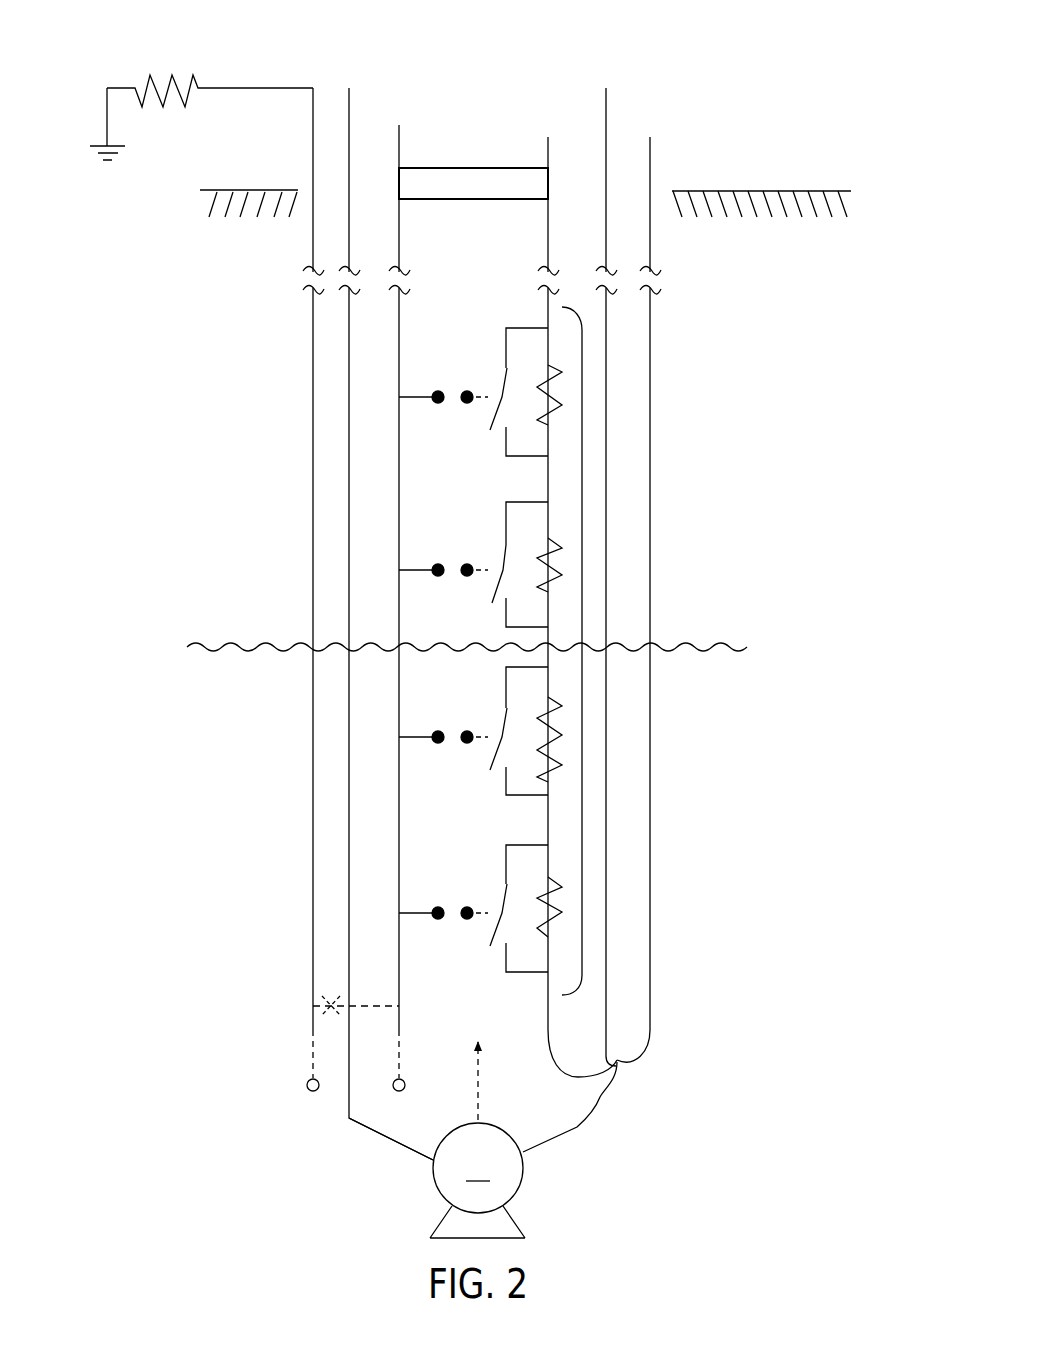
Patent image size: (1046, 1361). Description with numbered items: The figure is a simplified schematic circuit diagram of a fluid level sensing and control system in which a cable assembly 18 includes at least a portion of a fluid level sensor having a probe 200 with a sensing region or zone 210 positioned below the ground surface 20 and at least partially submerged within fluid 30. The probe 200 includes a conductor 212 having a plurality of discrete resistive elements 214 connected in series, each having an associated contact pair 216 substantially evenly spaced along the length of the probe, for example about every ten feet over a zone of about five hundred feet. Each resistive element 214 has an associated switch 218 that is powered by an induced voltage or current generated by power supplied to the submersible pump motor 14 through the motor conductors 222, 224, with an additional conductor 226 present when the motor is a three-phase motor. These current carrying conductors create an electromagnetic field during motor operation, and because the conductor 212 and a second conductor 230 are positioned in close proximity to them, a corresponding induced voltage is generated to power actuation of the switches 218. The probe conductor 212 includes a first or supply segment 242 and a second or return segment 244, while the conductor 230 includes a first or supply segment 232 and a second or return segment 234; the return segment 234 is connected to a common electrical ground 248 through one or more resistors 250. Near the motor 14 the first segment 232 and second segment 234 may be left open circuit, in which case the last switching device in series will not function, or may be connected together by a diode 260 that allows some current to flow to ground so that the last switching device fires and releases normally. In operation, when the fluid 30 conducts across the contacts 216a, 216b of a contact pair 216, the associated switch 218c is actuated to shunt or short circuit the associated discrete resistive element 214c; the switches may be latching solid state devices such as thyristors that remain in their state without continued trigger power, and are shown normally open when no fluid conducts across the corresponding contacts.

The submersible pump motor 14 is at (477, 1180).
The cable assembly 18 is at (268, 430).
The ground surface 20 is at (272, 183).
The fluid 30 is at (680, 637).
The probe 200 is at (690, 143).
The sensing region or zone 210 is at (583, 607).
The conductor 212 is at (543, 236).
The discrete resistive elements 214 is at (560, 385).
The discrete resistive element 214c is at (560, 723).
The contact pair 216 is at (443, 552).
The contact 216a is at (438, 745).
The contact 216b is at (467, 728).
The switch 218 is at (492, 380).
The switch 218c is at (485, 757).
The motor conductor 222 is at (372, 1130).
The motor conductor 224 is at (578, 1128).
The additional conductor 226 is at (483, 1097).
The conductor 230 is at (407, 145).
The first segment or section 232 is at (407, 327).
The second segment or section 234 is at (308, 570).
The first segment or section 242 is at (556, 262).
The second segment or section 244 is at (665, 445).
The common electrical ground 248 is at (97, 168).
The resistor 250 is at (183, 68).
The diode 260 is at (340, 997).